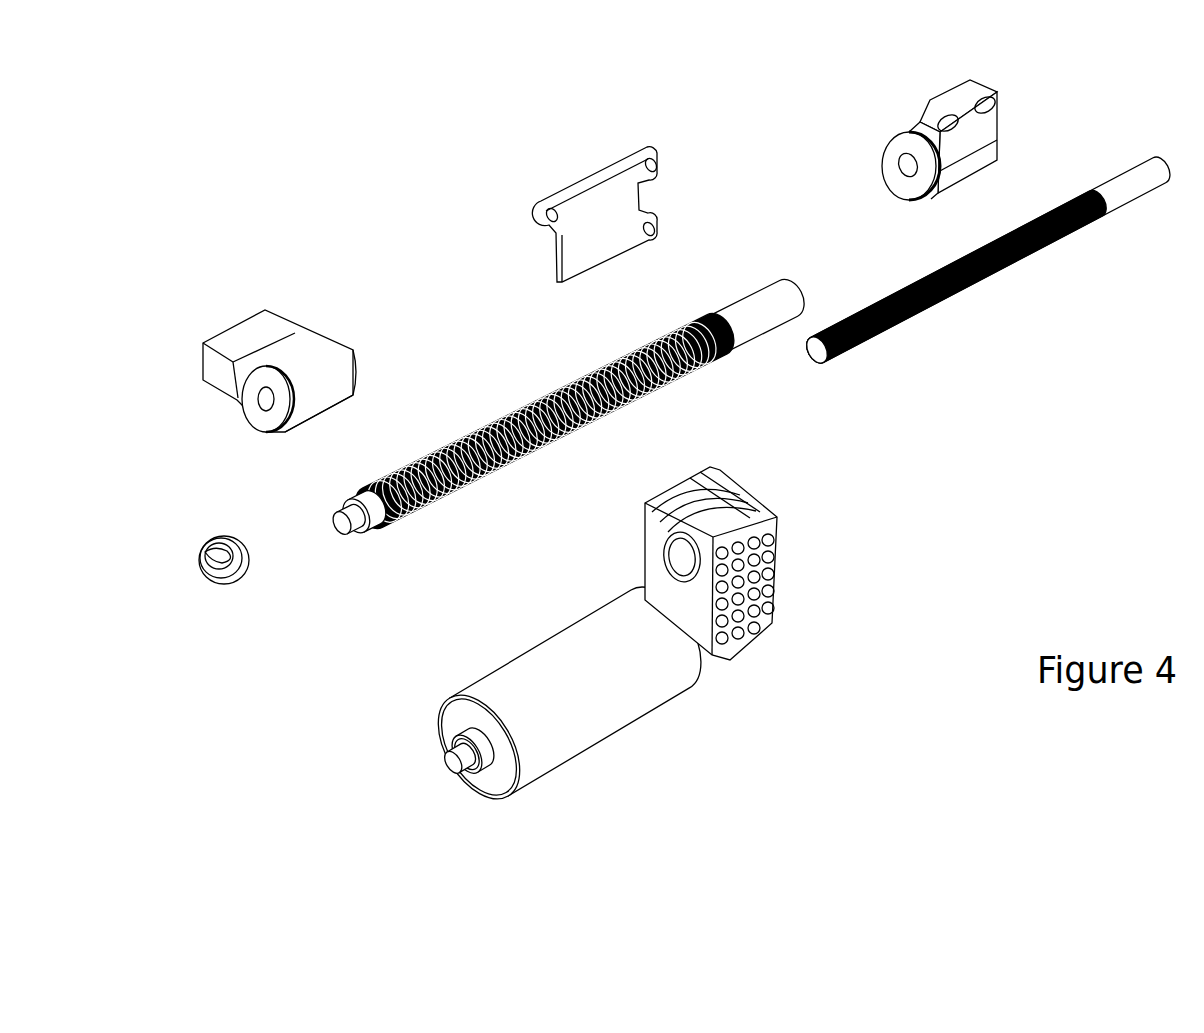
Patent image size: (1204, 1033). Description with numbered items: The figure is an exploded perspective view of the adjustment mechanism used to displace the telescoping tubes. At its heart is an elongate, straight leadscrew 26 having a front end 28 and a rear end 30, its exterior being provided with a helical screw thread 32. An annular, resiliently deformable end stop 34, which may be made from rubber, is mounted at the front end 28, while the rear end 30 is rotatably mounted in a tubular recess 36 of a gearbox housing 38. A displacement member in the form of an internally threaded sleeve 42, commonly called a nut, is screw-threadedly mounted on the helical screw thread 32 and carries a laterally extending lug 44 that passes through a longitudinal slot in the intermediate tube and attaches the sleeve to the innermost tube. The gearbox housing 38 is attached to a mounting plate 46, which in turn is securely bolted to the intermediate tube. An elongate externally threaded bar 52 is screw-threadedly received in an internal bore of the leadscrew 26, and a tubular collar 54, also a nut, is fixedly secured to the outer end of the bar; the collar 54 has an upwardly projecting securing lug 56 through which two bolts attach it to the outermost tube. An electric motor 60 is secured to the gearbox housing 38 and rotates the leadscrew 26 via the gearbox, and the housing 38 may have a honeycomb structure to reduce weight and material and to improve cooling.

The leadscrew 26 is at (563, 406).
The front end 28 is at (337, 533).
The rear end 30 is at (797, 300).
The helical screw thread 32 is at (462, 505).
The end stop 34 is at (250, 577).
The tubular recess 36 is at (670, 558).
The gearbox housing 38 is at (726, 563).
The internally threaded sleeve 42 is at (256, 344).
The laterally extending lug 44 is at (235, 345).
The mounting plate 46 is at (603, 220).
The externally threaded bar 52 is at (933, 273).
The tubular collar 54 is at (945, 132).
The securing lug 56 is at (987, 127).
The electric motor 60 is at (618, 697).